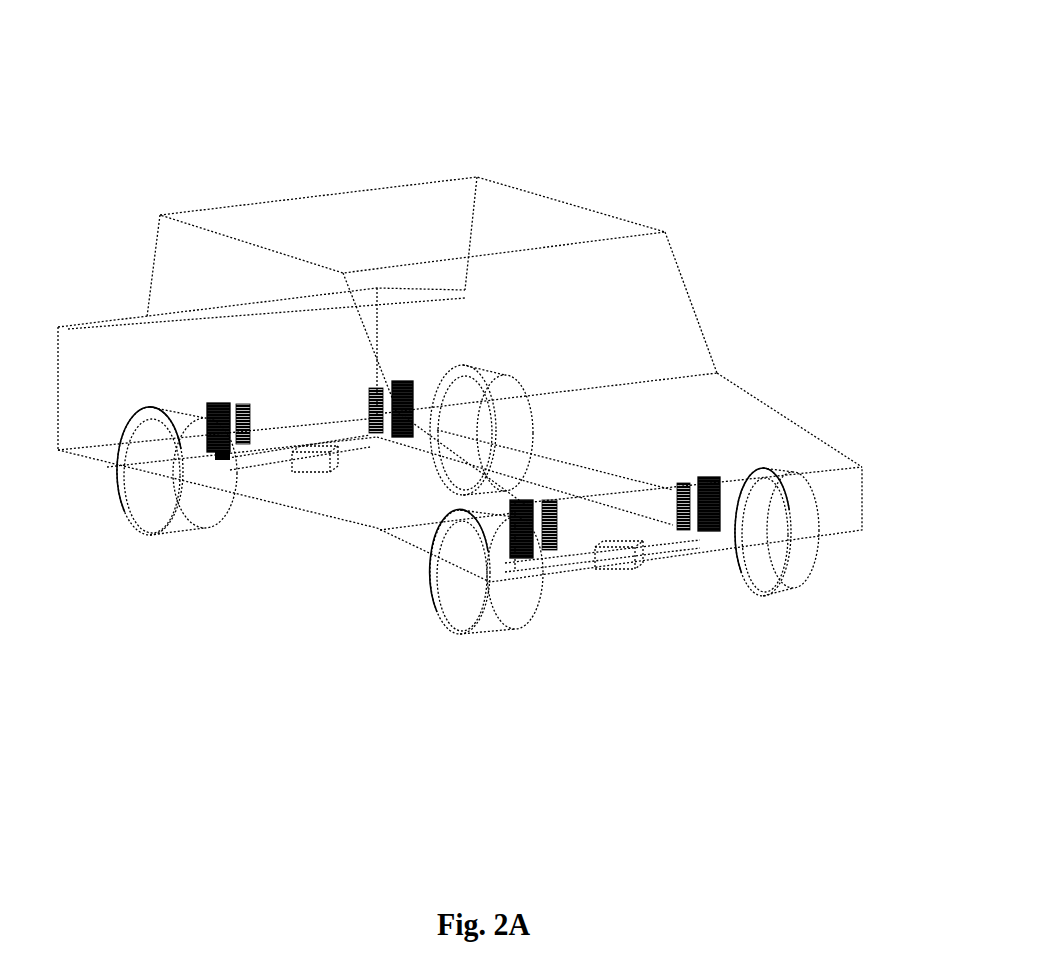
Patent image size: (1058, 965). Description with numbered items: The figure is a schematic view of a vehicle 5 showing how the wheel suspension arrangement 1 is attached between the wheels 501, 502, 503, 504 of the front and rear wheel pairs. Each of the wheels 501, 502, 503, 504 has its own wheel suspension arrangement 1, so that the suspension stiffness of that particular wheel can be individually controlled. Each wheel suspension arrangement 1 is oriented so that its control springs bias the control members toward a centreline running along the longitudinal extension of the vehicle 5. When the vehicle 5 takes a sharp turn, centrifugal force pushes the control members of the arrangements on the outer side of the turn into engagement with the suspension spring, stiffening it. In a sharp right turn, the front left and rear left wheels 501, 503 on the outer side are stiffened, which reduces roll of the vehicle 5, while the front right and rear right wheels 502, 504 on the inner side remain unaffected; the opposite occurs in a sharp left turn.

The vehicle 5 is at (373, 142).
The wheel suspension arrangement 1 is at (342, 375).
The front left wheel 501 is at (778, 573).
The front right wheel 502 is at (450, 592).
The rear left wheel 503 is at (458, 393).
The rear right wheel 504 is at (140, 500).